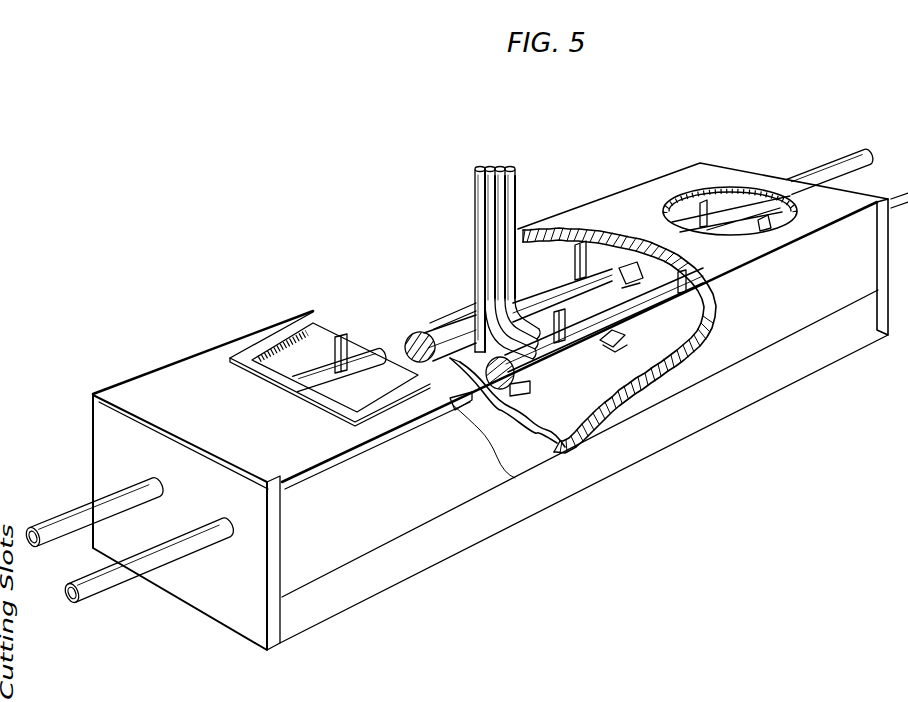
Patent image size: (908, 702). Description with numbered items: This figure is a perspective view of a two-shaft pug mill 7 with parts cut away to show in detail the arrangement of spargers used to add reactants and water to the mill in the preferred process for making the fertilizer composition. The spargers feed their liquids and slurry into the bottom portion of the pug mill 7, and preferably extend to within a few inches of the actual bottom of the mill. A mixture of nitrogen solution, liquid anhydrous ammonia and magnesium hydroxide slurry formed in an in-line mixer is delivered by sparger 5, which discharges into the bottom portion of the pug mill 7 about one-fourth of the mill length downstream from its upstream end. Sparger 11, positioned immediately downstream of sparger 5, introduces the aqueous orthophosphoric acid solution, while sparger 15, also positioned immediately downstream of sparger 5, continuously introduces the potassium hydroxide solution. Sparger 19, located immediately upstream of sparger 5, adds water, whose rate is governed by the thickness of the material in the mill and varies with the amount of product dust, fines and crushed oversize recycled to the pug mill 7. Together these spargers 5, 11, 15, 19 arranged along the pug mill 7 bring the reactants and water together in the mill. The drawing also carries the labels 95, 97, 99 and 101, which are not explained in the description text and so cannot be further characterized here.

The sparger 5 is at (488, 330).
The pug mill 7 is at (147, 395).
The sparger 11 is at (500, 312).
The sparger 15 is at (522, 307).
The sparger 19 is at (448, 330).
The tube 95 is at (145, 560).
The cutting blade 97 is at (338, 340).
The recess frame 99 is at (272, 352).
The hole 101 is at (770, 197).